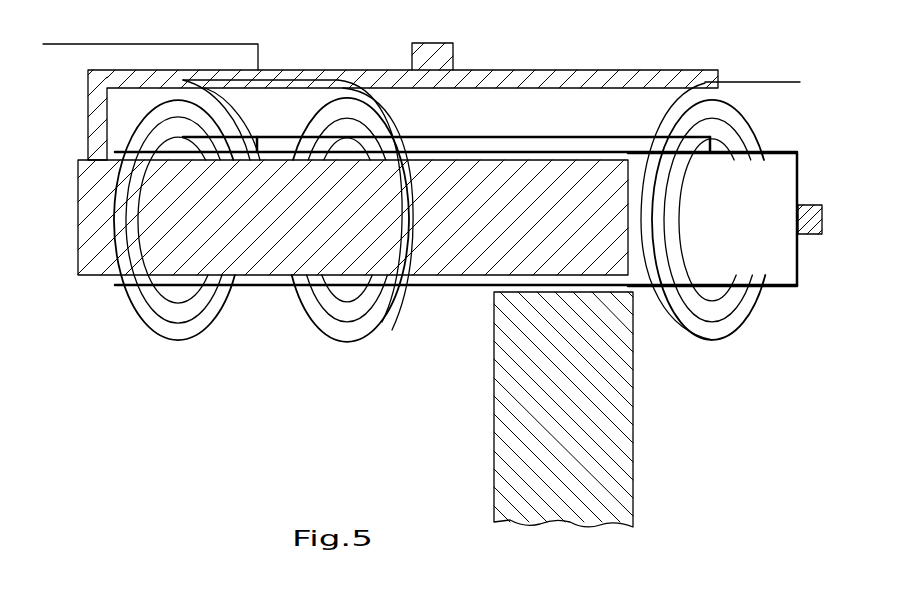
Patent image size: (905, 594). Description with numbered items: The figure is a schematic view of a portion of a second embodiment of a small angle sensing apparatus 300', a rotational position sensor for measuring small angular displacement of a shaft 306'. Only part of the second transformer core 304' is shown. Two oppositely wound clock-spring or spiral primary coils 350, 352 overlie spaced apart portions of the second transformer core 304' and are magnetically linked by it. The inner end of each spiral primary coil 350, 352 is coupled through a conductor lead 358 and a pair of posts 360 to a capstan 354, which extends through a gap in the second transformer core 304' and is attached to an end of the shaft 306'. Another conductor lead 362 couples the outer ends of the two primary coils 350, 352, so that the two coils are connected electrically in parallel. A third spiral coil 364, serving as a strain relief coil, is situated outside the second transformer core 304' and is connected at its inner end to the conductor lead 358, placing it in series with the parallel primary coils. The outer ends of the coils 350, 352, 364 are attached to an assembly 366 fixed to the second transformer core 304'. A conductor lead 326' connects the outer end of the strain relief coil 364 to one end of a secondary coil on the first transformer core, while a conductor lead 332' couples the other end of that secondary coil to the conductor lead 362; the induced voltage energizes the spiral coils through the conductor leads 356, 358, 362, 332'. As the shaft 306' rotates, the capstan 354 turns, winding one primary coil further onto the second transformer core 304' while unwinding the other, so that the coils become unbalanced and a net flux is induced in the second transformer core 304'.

The small angle sensing apparatus 300' is at (215, 469).
The second transformer core 304' is at (355, 343).
The shaft 306' is at (824, 178).
The conductor lead 326' is at (743, 185).
The conductor lead 332' is at (142, 72).
The spiral primary coil 350 is at (160, 333).
The spiral primary coil 352 is at (302, 320).
The capstan 354 is at (403, 307).
The conductor lead 356 is at (492, 288).
The conductor lead 358 is at (537, 137).
The posts 360 is at (257, 137).
The conductor lead 362 is at (285, 71).
The strain relief spiral coil 364 is at (713, 342).
The assembly 366 is at (617, 80).